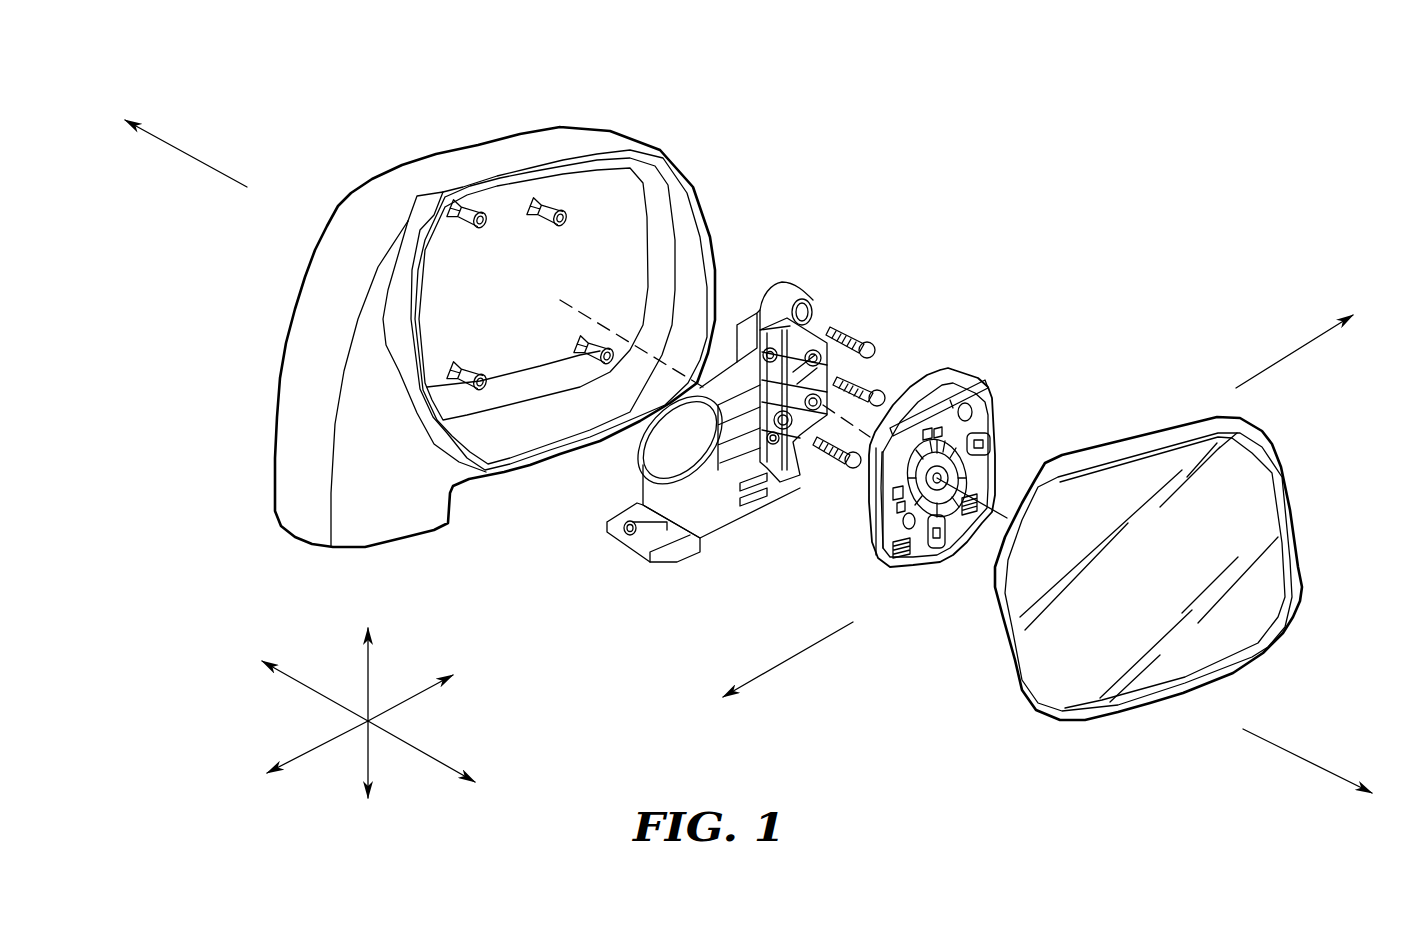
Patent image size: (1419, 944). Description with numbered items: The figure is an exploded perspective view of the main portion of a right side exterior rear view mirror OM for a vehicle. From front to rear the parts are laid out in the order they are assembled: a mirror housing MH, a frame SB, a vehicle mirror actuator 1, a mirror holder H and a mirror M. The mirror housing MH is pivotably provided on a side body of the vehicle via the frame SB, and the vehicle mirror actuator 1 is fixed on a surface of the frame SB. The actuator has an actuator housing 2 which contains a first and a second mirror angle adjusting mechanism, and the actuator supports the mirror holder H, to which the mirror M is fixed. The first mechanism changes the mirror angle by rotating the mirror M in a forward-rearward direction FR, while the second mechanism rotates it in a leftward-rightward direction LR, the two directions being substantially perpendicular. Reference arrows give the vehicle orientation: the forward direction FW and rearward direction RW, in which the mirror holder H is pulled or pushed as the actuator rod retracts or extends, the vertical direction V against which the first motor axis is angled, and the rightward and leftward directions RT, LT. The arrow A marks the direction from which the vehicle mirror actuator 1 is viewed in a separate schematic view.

The right side exterior rear view mirror OM is at (1037, 238).
The mirror housing MH is at (570, 138).
The frame SB is at (750, 317).
The vehicle mirror actuator 1 is at (970, 303).
The actuator housing 2 is at (908, 389).
The mirror holder H is at (990, 430).
The mirror M is at (1150, 470).
The viewing direction A is at (1270, 660).
The forward direction FW is at (172, 141).
The rearward direction RW is at (1321, 772).
The right direction RT is at (1308, 341).
The left direction LT is at (775, 671).
The vertical direction V is at (368, 672).
The forward-rearward direction FR is at (423, 750).
The leftward-rightward direction LR is at (308, 753).